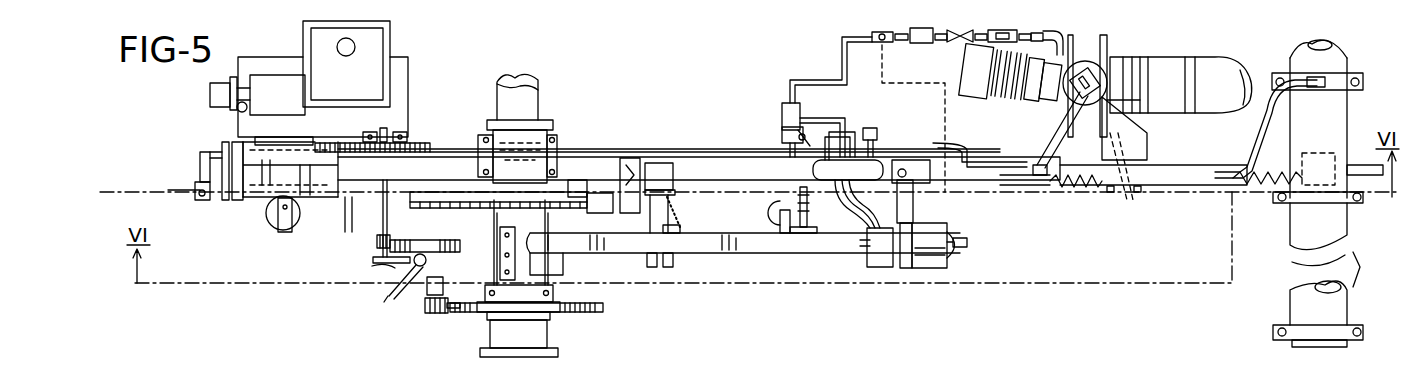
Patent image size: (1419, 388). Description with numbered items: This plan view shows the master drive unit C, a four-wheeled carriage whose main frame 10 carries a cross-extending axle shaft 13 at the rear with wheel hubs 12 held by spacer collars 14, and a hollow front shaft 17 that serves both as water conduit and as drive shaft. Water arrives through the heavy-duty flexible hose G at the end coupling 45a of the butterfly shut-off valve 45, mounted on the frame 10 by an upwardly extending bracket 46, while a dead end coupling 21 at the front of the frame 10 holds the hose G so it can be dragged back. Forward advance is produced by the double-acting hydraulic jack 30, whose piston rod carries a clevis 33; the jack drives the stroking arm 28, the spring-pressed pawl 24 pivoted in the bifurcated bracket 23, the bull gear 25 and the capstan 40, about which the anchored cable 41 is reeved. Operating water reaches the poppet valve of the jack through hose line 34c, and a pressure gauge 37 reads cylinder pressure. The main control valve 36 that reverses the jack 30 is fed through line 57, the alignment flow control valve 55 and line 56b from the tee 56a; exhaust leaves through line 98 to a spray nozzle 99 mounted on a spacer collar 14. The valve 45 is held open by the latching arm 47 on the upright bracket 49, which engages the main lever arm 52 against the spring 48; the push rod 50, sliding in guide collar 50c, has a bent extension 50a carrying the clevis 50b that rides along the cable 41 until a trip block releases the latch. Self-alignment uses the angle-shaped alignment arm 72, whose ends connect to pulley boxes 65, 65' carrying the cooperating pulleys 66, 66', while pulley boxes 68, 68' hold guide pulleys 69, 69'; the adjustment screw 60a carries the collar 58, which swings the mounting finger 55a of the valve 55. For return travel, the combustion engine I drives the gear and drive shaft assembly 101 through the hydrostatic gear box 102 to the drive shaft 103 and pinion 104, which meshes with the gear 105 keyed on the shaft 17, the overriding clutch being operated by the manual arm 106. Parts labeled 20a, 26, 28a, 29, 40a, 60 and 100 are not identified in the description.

The main frame 10 is at (702, 168).
The hub 12 is at (1353, 232).
The axle shaft 13 is at (1353, 297).
The spacer collar 14 is at (1365, 82).
The front shaft 17 is at (540, 87).
The bellows 20a is at (977, 73).
The dead end coupling 21 is at (223, 143).
The bifurcated bracket 23 is at (653, 255).
The power stroke pawl 24 is at (648, 250).
The bull gear 25 is at (438, 210).
The block 26 is at (593, 197).
The stroking arm 28 is at (755, 253).
The block 28a is at (867, 250).
The base plate 29 is at (548, 323).
The hydraulic jack 30 is at (930, 255).
The clevis 33 is at (894, 245).
The flexible hose line 34c is at (914, 222).
The main control valve 36 is at (880, 167).
The pressure gauge 37 is at (968, 243).
The capstan 40 is at (448, 190).
The rack 40a is at (430, 180).
The anchored cable 41 is at (168, 190).
The main shut-off valve 45 is at (1108, 66).
The end coupling 45a is at (1128, 110).
The bracket 46 is at (1145, 150).
The latching arm 47 is at (1014, 185).
The spring 48 is at (1077, 198).
The mounting bracket 49 is at (1125, 202).
The push rod 50 is at (222, 150).
The extension portion 50a is at (200, 173).
The clevis 50b is at (202, 200).
The guide collar 50c is at (547, 114).
The lever arm 52 is at (1055, 128).
The alignment flow control valve 55 is at (782, 116).
The mounting finger 55a is at (800, 108).
The tee 56a is at (872, 35).
The supply line 56b is at (818, 80).
The line 57 is at (852, 128).
The collar 58 is at (806, 133).
The block 60 is at (800, 235).
The adjustment screw 60a is at (823, 220).
The pulley mounting box 65 is at (658, 285).
The pulley mounting box 65' is at (274, 235).
The pulley 66 is at (744, 210).
The pulley 66' is at (300, 225).
The pulley box 68 is at (631, 241).
The pulley box 68' is at (355, 287).
The guide alignment pulley 69 is at (628, 166).
The guide alignment pulley 69' is at (350, 226).
The alignment arm member 72 is at (657, 152).
The exhaust line 98 is at (1268, 127).
The spray nozzle 99 is at (1316, 88).
The control box 100 is at (338, 208).
The gear and drive shaft assembly 101 is at (377, 200).
The hydrostatic gear box 102 is at (400, 290).
The drive shaft 103 is at (418, 300).
The pinion 104 is at (428, 295).
The gear 105 is at (462, 340).
The manual operating arm 106 is at (384, 302).
The master drive unit C is at (674, 85).
The flexible water supply hose G is at (1217, 58).
The combustion engine I is at (191, 97).